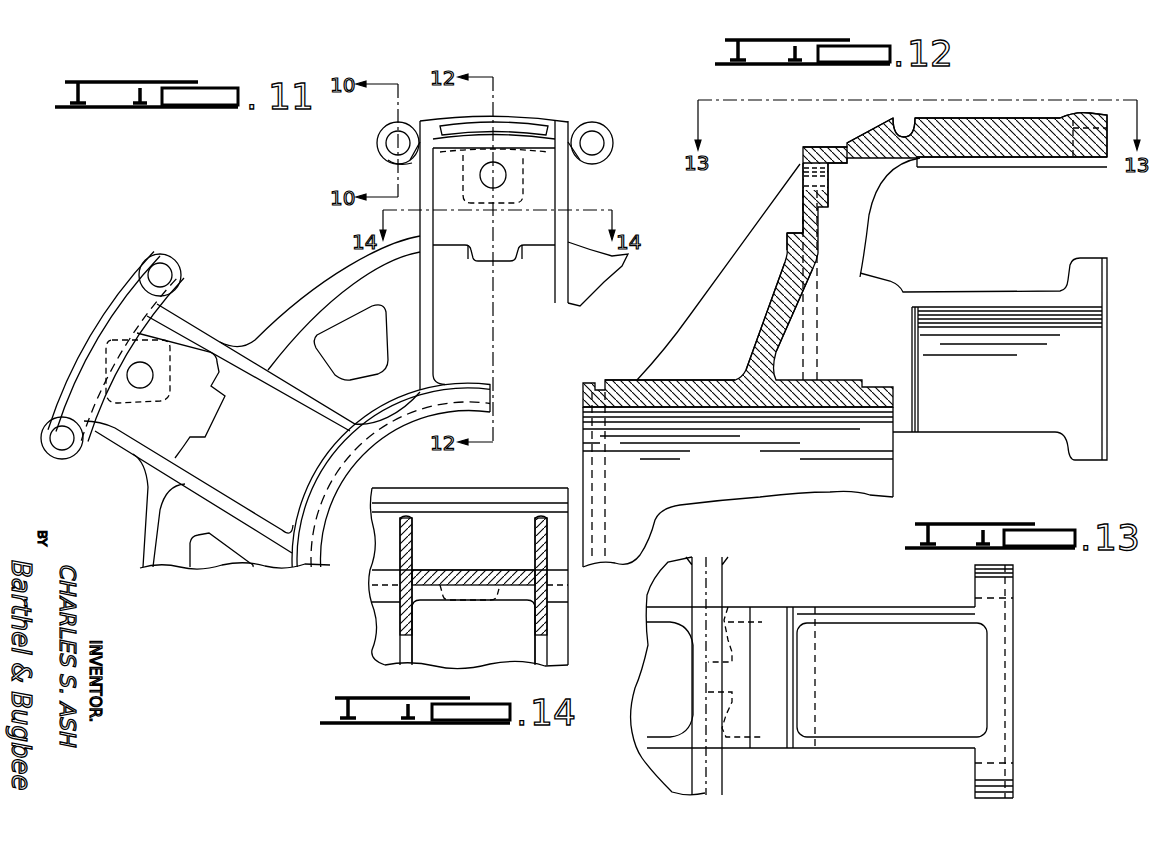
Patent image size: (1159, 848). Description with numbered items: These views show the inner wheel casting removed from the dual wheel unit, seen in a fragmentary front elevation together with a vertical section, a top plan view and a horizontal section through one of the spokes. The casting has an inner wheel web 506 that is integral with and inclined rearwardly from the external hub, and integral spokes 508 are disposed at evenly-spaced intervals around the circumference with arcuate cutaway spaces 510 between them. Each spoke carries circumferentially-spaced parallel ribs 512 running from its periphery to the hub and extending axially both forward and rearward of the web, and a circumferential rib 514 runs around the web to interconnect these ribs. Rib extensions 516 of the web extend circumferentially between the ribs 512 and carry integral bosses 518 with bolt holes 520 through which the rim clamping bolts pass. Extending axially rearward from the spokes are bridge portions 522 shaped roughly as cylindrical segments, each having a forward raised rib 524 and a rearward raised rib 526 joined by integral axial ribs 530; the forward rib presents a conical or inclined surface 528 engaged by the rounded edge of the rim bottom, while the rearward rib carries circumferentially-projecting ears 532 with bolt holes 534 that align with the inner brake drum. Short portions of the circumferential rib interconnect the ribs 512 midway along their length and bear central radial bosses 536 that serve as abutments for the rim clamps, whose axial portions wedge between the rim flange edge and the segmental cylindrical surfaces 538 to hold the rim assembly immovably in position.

In FIG. 11, the inner wheel web 506 is at (324, 290).
In FIG. 12, the inner wheel web 506 is at (760, 318).
In FIG. 11, the spokes 508 is at (575, 182).
In FIG. 11, the cutaway spaces 510 is at (312, 232).
In FIG. 11, the ribs 512 is at (428, 193).
In FIG. 12, the ribs 512 is at (868, 228).
In FIG. 14, the ribs 512 is at (412, 538).
In FIG. 11, the circumferential rib 514 is at (270, 312).
In FIG. 11, the rib extensions 516 is at (546, 186).
In FIG. 12, the rib extensions 516 is at (803, 210).
In FIG. 14, the rib extensions 516 is at (456, 578).
In FIG. 12, the bosses 518 is at (874, 197).
In FIG. 11, the bolt holes 520 is at (500, 182).
In FIG. 12, the bolt holes 520 is at (803, 158).
In FIG. 12, the bridge portions 522 is at (1012, 134).
In FIG. 13, the bridge portions 522 is at (842, 606).
In FIG. 12, the forward raised rib 524 is at (902, 134).
In FIG. 13, the forward raised rib 524 is at (780, 609).
In FIG. 12, the rearward raised rib 526 is at (1088, 122).
In FIG. 13, the rearward raised rib 526 is at (990, 663).
In FIG. 12, the conical surface 528 is at (866, 132).
In FIG. 13, the conical surface 528 is at (772, 740).
In FIG. 12, the axial ribs 530 is at (976, 128).
In FIG. 13, the axial ribs 530 is at (893, 616).
In FIG. 11, the ears 532 is at (378, 143).
In FIG. 13, the ears 532 is at (1002, 568).
In FIG. 11, the bolt holes 534 is at (388, 154).
In FIG. 13, the bolt holes 534 is at (1000, 771).
In FIG. 11, the central radial bosses 536 is at (478, 262).
In FIG. 12, the central radial bosses 536 is at (787, 245).
In FIG. 11, the segmental cylindrical surfaces 538 is at (520, 126).
In FIG. 12, the segmental cylindrical surfaces 538 is at (812, 146).
In FIG. 13, the segmental cylindrical surfaces 538 is at (728, 612).